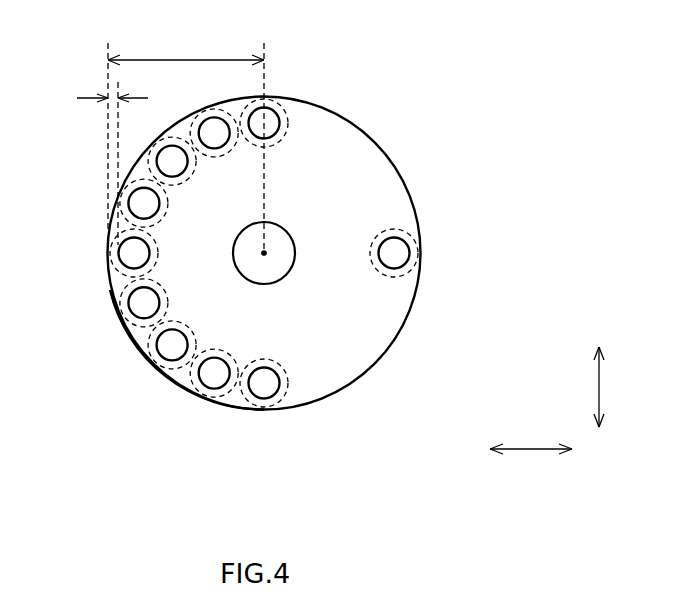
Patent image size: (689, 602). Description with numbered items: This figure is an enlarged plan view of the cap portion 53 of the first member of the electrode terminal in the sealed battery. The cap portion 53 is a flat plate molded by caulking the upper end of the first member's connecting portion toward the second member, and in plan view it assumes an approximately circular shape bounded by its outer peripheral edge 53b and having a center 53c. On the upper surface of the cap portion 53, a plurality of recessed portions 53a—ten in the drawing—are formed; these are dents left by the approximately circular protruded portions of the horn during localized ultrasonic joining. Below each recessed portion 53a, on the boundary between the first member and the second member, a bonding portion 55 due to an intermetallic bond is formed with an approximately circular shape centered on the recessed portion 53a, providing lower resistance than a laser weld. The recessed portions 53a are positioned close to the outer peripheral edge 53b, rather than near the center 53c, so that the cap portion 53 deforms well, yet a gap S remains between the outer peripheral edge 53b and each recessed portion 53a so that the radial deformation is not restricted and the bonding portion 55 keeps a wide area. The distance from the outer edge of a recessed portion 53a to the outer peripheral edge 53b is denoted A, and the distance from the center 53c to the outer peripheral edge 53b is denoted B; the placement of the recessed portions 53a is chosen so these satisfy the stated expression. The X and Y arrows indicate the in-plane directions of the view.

The cap portion 53 is at (380, 177).
The recessed portions 53a is at (275, 110).
The outer peripheral edge 53b is at (168, 378).
The center 53c is at (265, 253).
The bonding portion 55 is at (290, 128).
The gap S is at (117, 267).
The distance from outer edge of recessed portion to outer peripheral edge A is at (110, 100).
The distance from center to outer peripheral edge B is at (186, 143).
The X direction X is at (531, 461).
The Y direction Y is at (609, 387).